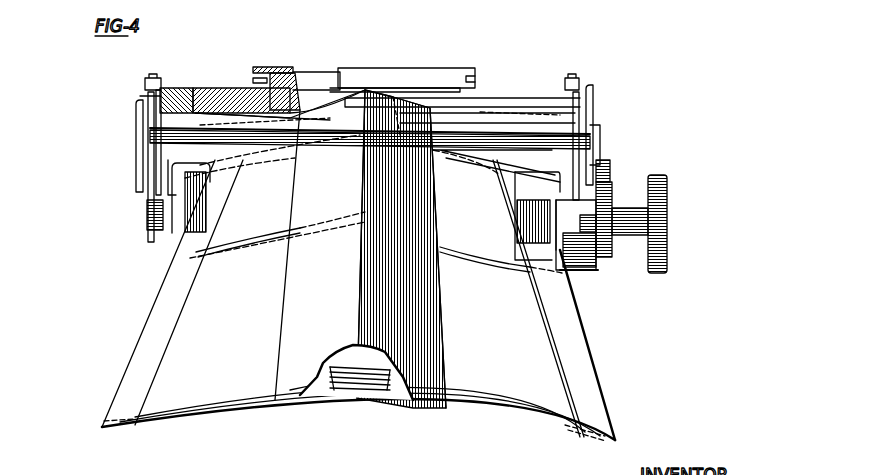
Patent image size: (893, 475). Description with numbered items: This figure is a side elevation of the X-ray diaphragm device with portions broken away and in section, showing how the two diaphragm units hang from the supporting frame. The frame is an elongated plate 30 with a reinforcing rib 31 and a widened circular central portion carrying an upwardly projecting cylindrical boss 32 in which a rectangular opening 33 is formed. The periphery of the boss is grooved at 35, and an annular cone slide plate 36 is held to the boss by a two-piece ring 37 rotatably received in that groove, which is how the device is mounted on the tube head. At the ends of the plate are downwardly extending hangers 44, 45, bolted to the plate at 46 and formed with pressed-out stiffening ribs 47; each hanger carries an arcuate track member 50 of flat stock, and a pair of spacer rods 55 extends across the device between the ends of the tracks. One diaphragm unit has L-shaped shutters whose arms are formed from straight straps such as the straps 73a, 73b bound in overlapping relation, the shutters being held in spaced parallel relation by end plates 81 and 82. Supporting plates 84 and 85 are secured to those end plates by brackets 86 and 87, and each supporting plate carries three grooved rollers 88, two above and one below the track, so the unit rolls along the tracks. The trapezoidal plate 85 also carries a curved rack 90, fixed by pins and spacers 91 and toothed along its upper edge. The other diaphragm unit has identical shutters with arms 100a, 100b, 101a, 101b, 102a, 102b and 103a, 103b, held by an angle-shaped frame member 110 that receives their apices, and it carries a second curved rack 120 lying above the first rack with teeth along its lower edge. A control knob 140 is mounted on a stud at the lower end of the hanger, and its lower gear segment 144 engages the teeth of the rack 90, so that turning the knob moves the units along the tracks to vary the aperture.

The elongated plate 30 is at (535, 98).
The reinforcing rib 31 is at (500, 106).
The cylindrical boss 32 is at (279, 64).
The rectangular opening 33 is at (302, 84).
The groove 35 is at (258, 75).
The annular cone slide plate 36 is at (412, 73).
The two-piece ring 37 is at (449, 84).
The bracket or hanger 44 is at (590, 135).
The bracket or hanger 45 is at (140, 157).
The bolts 46 is at (150, 78).
The stiffening ribs 47 is at (137, 133).
The track member 50 is at (148, 98).
The spacer rods 55 is at (249, 144).
The straight strap 73a is at (210, 428).
The straight strap 73b is at (521, 417).
The strap or plate 81 is at (122, 388).
The strap or plate 82 is at (593, 395).
The supporting plate 84 is at (167, 181).
The supporting plate 85 is at (562, 275).
The bracket 86 is at (533, 228).
The bracket 87 is at (200, 200).
The grooved rollers 88 is at (150, 222).
The curved rack 90 is at (607, 273).
The pins and spacers 91 is at (607, 287).
The shutter arm 100a is at (465, 118).
The shutter arm 100b is at (253, 112).
The shutter arm 101a is at (455, 163).
The shutter arm 101b is at (287, 160).
The shutter arm 102a is at (470, 263).
The shutter arm 102b is at (227, 247).
The shutter arm 103a is at (403, 410).
The shutter arm 103b is at (272, 412).
The frame member 110 is at (437, 367).
The curved rack 120 is at (608, 165).
The control knob 140 is at (666, 208).
The gear segment 144 is at (610, 187).